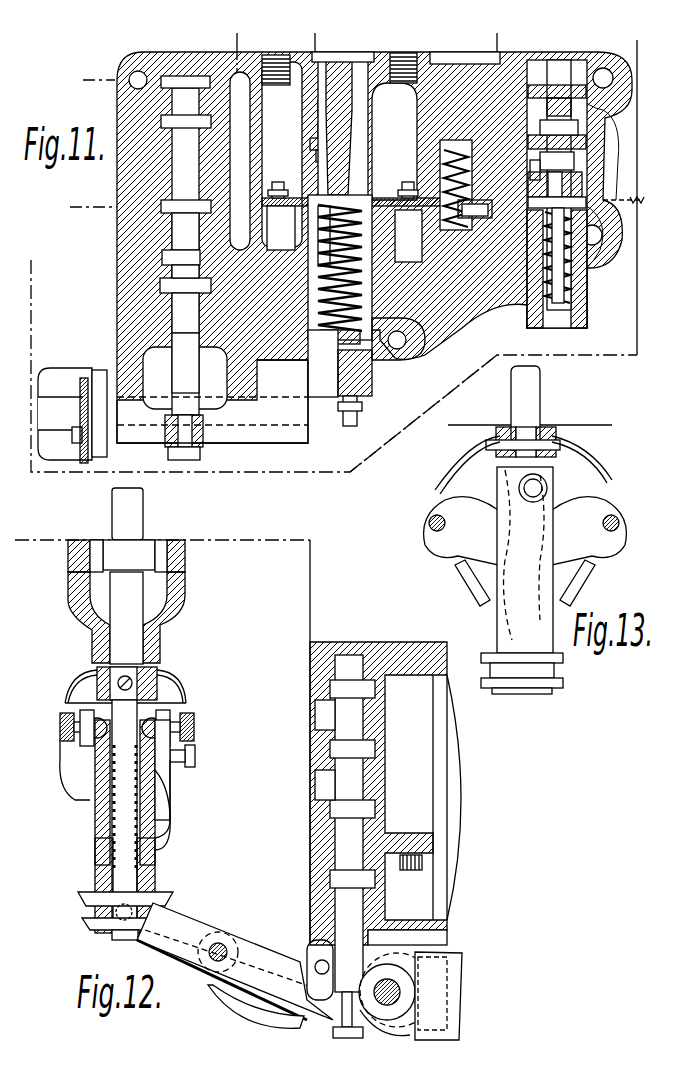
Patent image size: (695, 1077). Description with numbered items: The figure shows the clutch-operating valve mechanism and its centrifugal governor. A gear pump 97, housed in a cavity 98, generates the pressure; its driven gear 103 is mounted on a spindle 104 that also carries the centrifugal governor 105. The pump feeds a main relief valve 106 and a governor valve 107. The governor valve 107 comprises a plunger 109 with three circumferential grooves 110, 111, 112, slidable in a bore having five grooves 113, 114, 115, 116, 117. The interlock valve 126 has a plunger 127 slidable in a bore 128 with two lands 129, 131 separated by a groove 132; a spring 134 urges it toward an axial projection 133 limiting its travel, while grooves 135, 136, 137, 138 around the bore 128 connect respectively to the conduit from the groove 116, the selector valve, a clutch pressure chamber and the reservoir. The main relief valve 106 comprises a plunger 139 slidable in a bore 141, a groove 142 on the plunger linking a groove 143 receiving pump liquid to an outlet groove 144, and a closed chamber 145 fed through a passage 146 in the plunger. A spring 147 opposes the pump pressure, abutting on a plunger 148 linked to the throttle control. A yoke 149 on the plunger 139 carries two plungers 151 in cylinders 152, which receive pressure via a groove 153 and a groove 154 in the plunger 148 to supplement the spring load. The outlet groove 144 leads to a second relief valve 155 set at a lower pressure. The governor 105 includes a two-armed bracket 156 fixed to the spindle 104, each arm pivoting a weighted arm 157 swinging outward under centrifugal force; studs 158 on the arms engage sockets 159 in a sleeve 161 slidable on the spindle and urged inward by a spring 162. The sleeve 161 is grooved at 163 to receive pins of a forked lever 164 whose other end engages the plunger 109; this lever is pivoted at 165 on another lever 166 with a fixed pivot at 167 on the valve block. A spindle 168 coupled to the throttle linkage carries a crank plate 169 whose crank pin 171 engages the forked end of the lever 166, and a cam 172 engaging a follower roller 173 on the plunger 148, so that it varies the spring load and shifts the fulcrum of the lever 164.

In FIG. 12, the gear pump 97 is at (103, 540).
In FIG. 12, the cavity 98 is at (180, 540).
In FIG. 12, the driven gear 103 is at (141, 546).
In FIG. 12, the spindle 104 is at (132, 602).
In FIG. 13, the centrifugal governor 105 is at (420, 556).
In FIG. 12, the centrifugal governor 105 is at (62, 752).
In FIG. 11, the main relief valve 106 is at (373, 50).
In FIG. 11, the governor valve 107 is at (118, 193).
In FIG. 12, the governor valve 107 is at (312, 887).
In FIG. 11, the plunger 109 is at (163, 270).
In FIG. 12, the plunger 109 is at (345, 924).
In FIG. 11, the circumferential groove 110 is at (122, 181).
In FIG. 11, the circumferential groove 111 is at (165, 258).
In FIG. 11, the circumferential groove 112 is at (165, 320).
In FIG. 11, the circumferential groove 113 is at (148, 86).
In FIG. 11, the circumferential groove 114 is at (150, 150).
In FIG. 11, the circumferential groove 115 is at (160, 208).
In FIG. 11, the circumferential groove 116 is at (165, 282).
In FIG. 11, the circumferential groove 117 is at (168, 300).
In FIG. 11, the interlock valve 126 is at (587, 166).
In FIG. 11, the plunger 127 is at (586, 139).
In FIG. 11, the bore 128 is at (586, 192).
In FIG. 11, the land 129 is at (582, 143).
In FIG. 11, the land 131 is at (632, 180).
In FIG. 11, the groove 132 is at (634, 157).
In FIG. 11, the axial projection 133 is at (580, 95).
In FIG. 11, the spring 134 is at (596, 232).
In FIG. 11, the circumferential groove 135 is at (546, 85).
In FIG. 11, the circumferential groove 136 is at (556, 56).
In FIG. 11, the circumferential groove 137 is at (466, 185).
In FIG. 11, the circumferential groove 138 is at (618, 206).
In FIG. 11, the plunger 139 is at (302, 92).
In FIG. 11, the bore 141 is at (318, 108).
In FIG. 11, the circumferential groove 142 is at (312, 144).
In FIG. 11, the groove 143 is at (318, 128).
In FIG. 11, the outlet groove 144 is at (284, 205).
In FIG. 11, the closed chamber 145 is at (340, 70).
In FIG. 11, the passage 146 is at (380, 58).
In FIG. 11, the spring 147 is at (406, 350).
In FIG. 11, the plunger 148 is at (372, 378).
In FIG. 11, the yoke 149 is at (186, 156).
In FIG. 11, the plungers 151 is at (175, 233).
In FIG. 11, the cylinders 152 is at (282, 292).
In FIG. 11, the groove 153 is at (430, 328).
In FIG. 11, the groove 154 is at (409, 236).
In FIG. 11, the second relief valve 155 is at (476, 50).
In FIG. 13, the two-armed bracket 156 is at (462, 452).
In FIG. 12, the two-armed bracket 156 is at (85, 682).
In FIG. 13, the weighted arm 157 is at (452, 582).
In FIG. 12, the weighted arm 157 is at (160, 842).
In FIG. 12, the studs 158 is at (162, 728).
In FIG. 12, the sockets 159 is at (178, 768).
In FIG. 13, the sleeve 161 is at (502, 617).
In FIG. 12, the sleeve 161 is at (156, 808).
In FIG. 12, the spring 162 is at (104, 812).
In FIG. 13, the circumferential groove 163 is at (562, 672).
In FIG. 12, the circumferential groove 163 is at (82, 918).
In FIG. 12, the forked lever 164 is at (196, 930).
In FIG. 12, the pivot 165 is at (246, 938).
In FIG. 12, the lever 166 is at (226, 1014).
In FIG. 12, the fixed pivot 167 is at (314, 967).
In FIG. 11, the spindle 168 is at (205, 420).
In FIG. 12, the spindle 168 is at (402, 989).
In FIG. 11, the crank plate 169 is at (96, 460).
In FIG. 12, the crank plate 169 is at (440, 1018).
In FIG. 11, the crank pin 171 is at (72, 440).
In FIG. 12, the crank pin 171 is at (440, 1020).
In FIG. 11, the cam 172 is at (405, 413).
In FIG. 11, the follower roller 173 is at (362, 409).